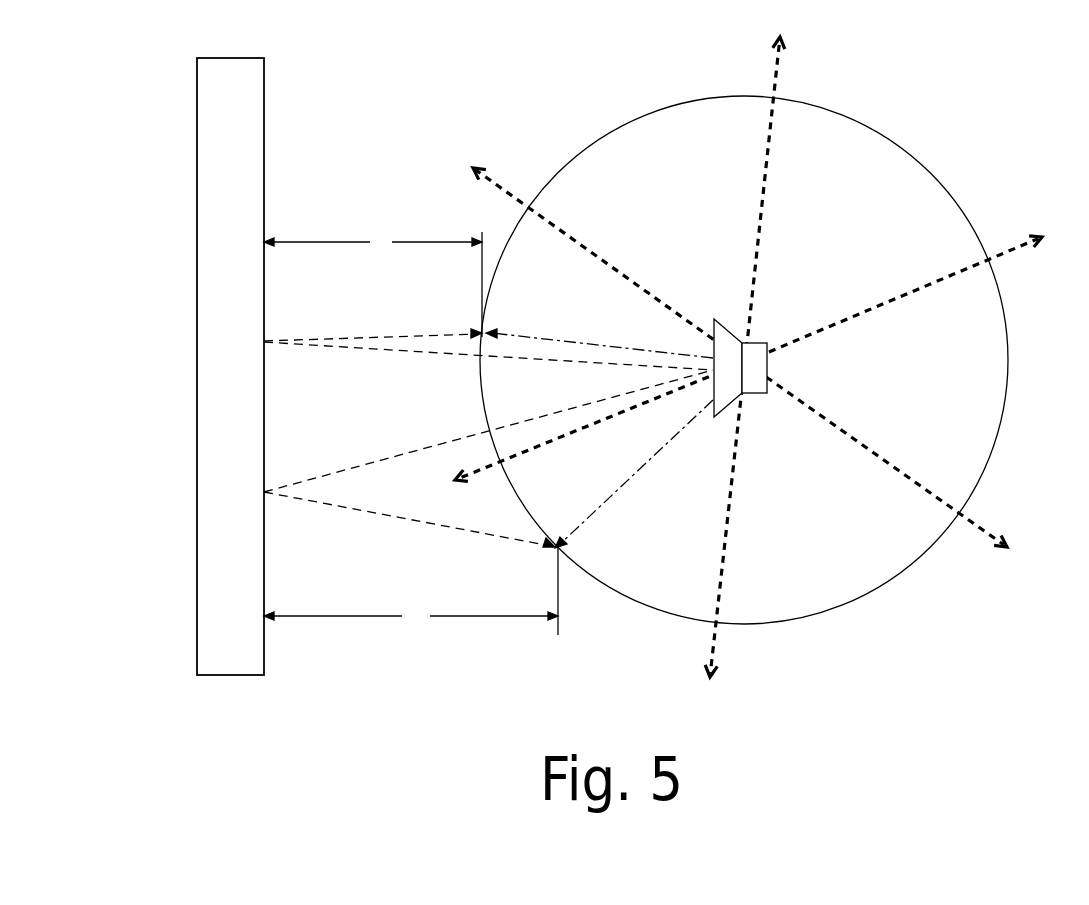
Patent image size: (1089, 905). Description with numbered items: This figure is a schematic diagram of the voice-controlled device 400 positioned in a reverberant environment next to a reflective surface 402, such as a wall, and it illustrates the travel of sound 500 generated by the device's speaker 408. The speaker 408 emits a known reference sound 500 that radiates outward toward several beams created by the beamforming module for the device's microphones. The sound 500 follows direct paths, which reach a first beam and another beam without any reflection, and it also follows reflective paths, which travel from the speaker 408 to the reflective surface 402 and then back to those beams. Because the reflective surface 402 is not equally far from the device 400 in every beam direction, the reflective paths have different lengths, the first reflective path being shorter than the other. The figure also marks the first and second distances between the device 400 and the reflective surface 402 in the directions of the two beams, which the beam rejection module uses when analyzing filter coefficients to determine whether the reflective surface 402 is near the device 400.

The voice-controlled device 400 is at (993, 479).
The reflective surface 402 is at (196, 650).
The speaker 408 is at (760, 364).
The sound 500 is at (388, 95).